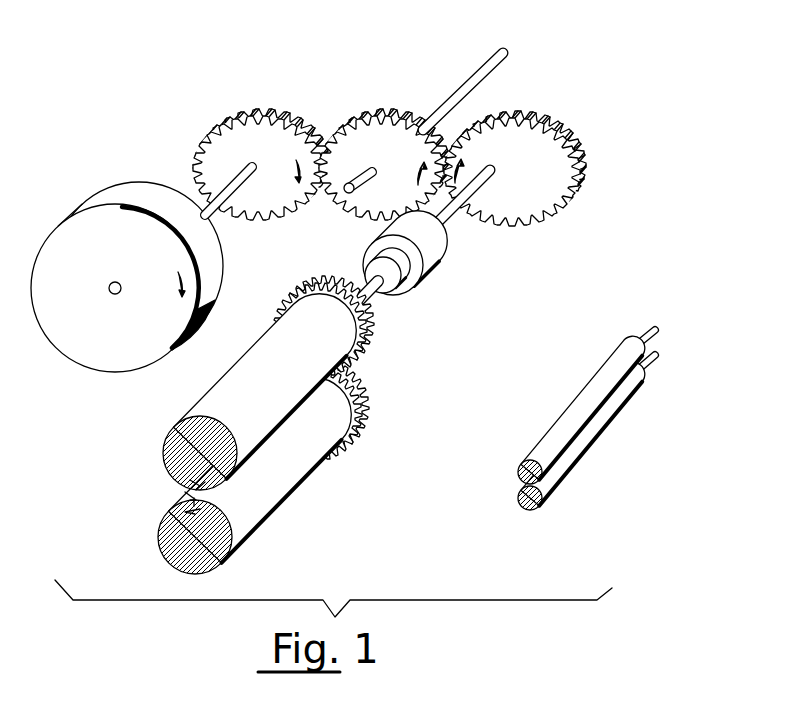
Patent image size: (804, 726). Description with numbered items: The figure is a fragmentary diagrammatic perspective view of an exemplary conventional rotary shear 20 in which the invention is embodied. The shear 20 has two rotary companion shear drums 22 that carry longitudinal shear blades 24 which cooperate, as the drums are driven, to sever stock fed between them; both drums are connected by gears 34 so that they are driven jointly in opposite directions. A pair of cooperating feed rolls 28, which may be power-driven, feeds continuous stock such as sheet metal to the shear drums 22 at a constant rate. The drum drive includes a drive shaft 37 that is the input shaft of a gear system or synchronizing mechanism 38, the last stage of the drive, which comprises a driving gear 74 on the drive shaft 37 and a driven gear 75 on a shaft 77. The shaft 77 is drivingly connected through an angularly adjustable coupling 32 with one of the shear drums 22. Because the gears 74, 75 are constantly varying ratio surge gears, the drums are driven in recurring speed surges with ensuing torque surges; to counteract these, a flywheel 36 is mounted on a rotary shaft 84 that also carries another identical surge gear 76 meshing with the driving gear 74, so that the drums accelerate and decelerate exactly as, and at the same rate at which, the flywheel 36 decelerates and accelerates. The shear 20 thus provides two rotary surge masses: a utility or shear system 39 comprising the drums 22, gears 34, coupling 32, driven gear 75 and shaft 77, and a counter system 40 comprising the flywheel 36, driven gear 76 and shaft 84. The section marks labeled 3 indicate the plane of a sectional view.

The rotary shear 20 is at (356, 517).
The shear drums 22 is at (318, 461).
The shear blades 24 is at (192, 500).
The feed rolls 28 is at (592, 427).
The angularly adjustable coupling 32 is at (418, 280).
The gears 34 is at (370, 370).
The flywheel 36 is at (100, 356).
The drive shaft 37 is at (471, 79).
The gear system 38 is at (407, 92).
The shear system 39 is at (449, 340).
The counter system 40 is at (172, 137).
The driving gear 74 is at (368, 120).
The driven gear 75 is at (530, 152).
The surge gear 76 is at (263, 126).
The shaft 77 is at (459, 222).
The rotary shaft 84 is at (222, 212).
The section line for FIG. 3 is at (629, 169).